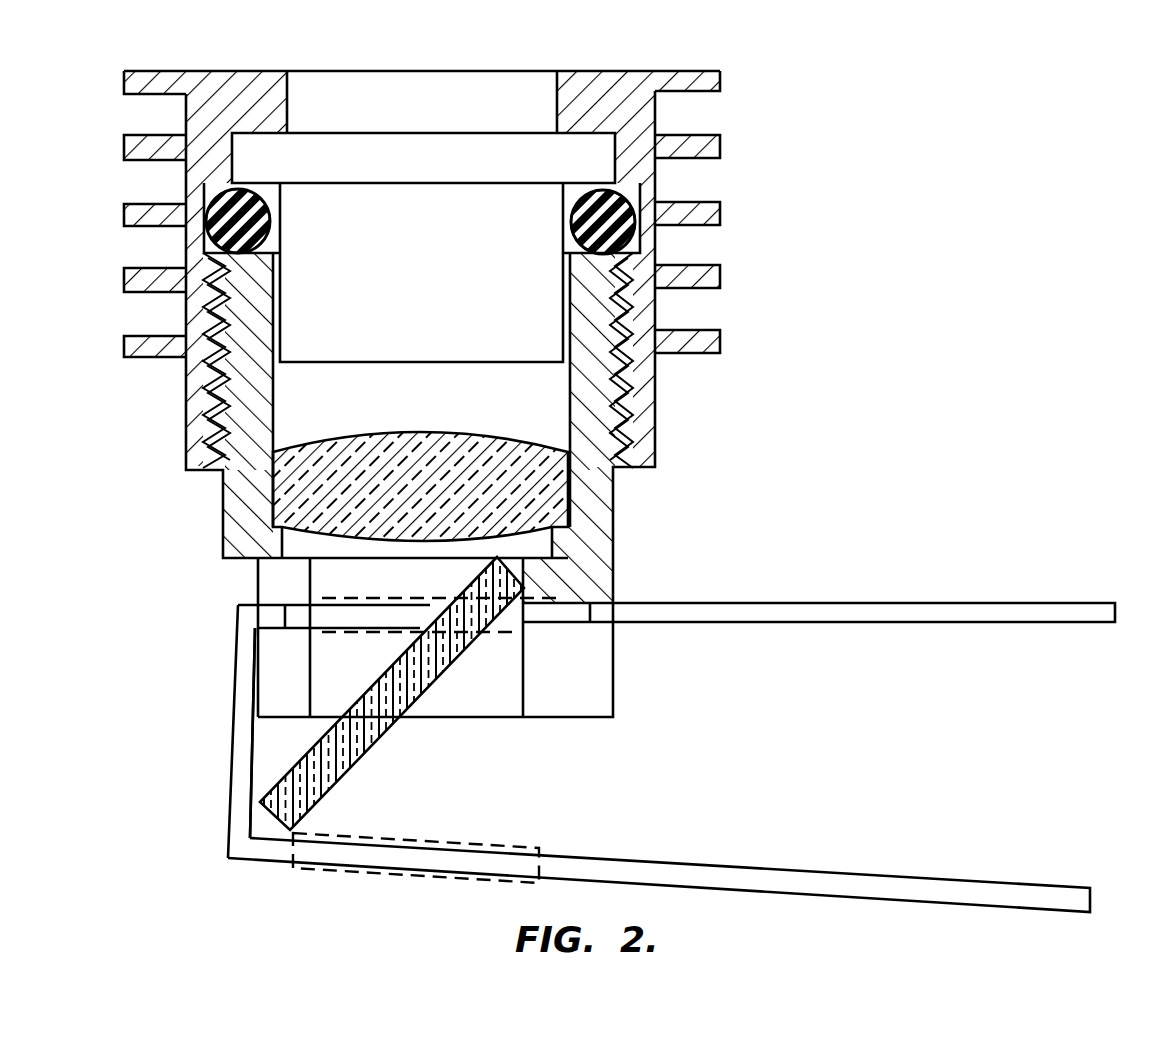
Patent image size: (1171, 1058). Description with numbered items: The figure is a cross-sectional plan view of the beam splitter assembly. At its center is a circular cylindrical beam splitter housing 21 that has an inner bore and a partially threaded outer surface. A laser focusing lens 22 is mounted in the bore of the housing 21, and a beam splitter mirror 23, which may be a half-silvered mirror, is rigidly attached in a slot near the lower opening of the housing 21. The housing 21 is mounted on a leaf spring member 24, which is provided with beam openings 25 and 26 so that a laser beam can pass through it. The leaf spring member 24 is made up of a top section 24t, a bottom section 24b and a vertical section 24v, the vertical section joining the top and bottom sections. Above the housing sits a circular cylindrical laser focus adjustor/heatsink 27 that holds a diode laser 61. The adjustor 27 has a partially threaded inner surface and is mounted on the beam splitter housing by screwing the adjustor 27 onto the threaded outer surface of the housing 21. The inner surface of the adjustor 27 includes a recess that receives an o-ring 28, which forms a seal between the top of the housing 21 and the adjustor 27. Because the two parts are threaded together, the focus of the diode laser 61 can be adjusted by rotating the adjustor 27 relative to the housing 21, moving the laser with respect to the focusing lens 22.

The beam splitter housing 21 is at (613, 502).
The laser focusing lens 22 is at (323, 442).
The beam splitter mirror 23 is at (347, 713).
The leaf spring member 24 is at (228, 715).
The top section 24t is at (725, 610).
The vertical section 24v is at (238, 772).
The bottom section 24b is at (652, 870).
The beam opening 25 is at (350, 597).
The beam opening 26 is at (405, 840).
The laser focus adjustor/heatsink 27 is at (643, 115).
The o-ring 28 is at (647, 197).
The diode laser 61 is at (498, 292).